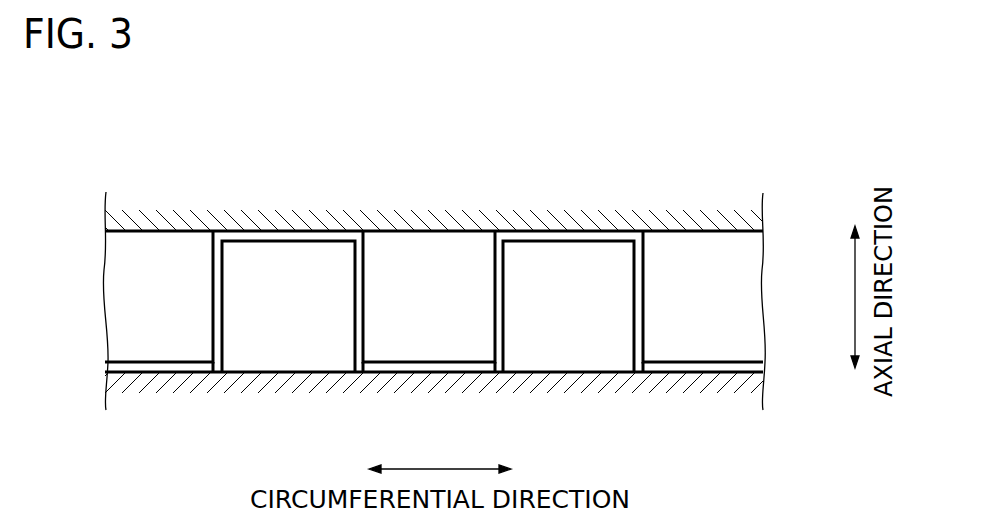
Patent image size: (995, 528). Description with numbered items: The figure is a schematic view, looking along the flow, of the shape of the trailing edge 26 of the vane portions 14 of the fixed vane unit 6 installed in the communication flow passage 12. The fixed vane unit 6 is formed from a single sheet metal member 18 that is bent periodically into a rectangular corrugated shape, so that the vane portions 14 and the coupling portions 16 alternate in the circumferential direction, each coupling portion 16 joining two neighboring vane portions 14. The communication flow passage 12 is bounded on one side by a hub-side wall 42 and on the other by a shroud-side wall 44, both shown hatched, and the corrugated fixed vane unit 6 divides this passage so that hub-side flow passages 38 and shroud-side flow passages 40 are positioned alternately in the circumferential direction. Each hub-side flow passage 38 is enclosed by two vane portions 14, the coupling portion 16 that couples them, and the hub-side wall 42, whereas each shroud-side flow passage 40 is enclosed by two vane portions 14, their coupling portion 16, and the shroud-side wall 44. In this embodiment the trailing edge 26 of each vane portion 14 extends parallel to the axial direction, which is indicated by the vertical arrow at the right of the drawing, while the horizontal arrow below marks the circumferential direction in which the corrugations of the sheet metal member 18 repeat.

The fixed vane unit 6 is at (130, 287).
The communication flow passage 12 is at (749, 313).
The vane portion 14 is at (212, 306).
The coupling portion 16 is at (283, 230).
The single sheet metal member 18 is at (645, 338).
The trailing edge 26 is at (223, 327).
The hub-side flow passage 38 is at (604, 260).
The shroud-side flow passage 40 is at (456, 258).
The hub-side wall 42 is at (573, 366).
The shroud-side wall 44 is at (697, 231).